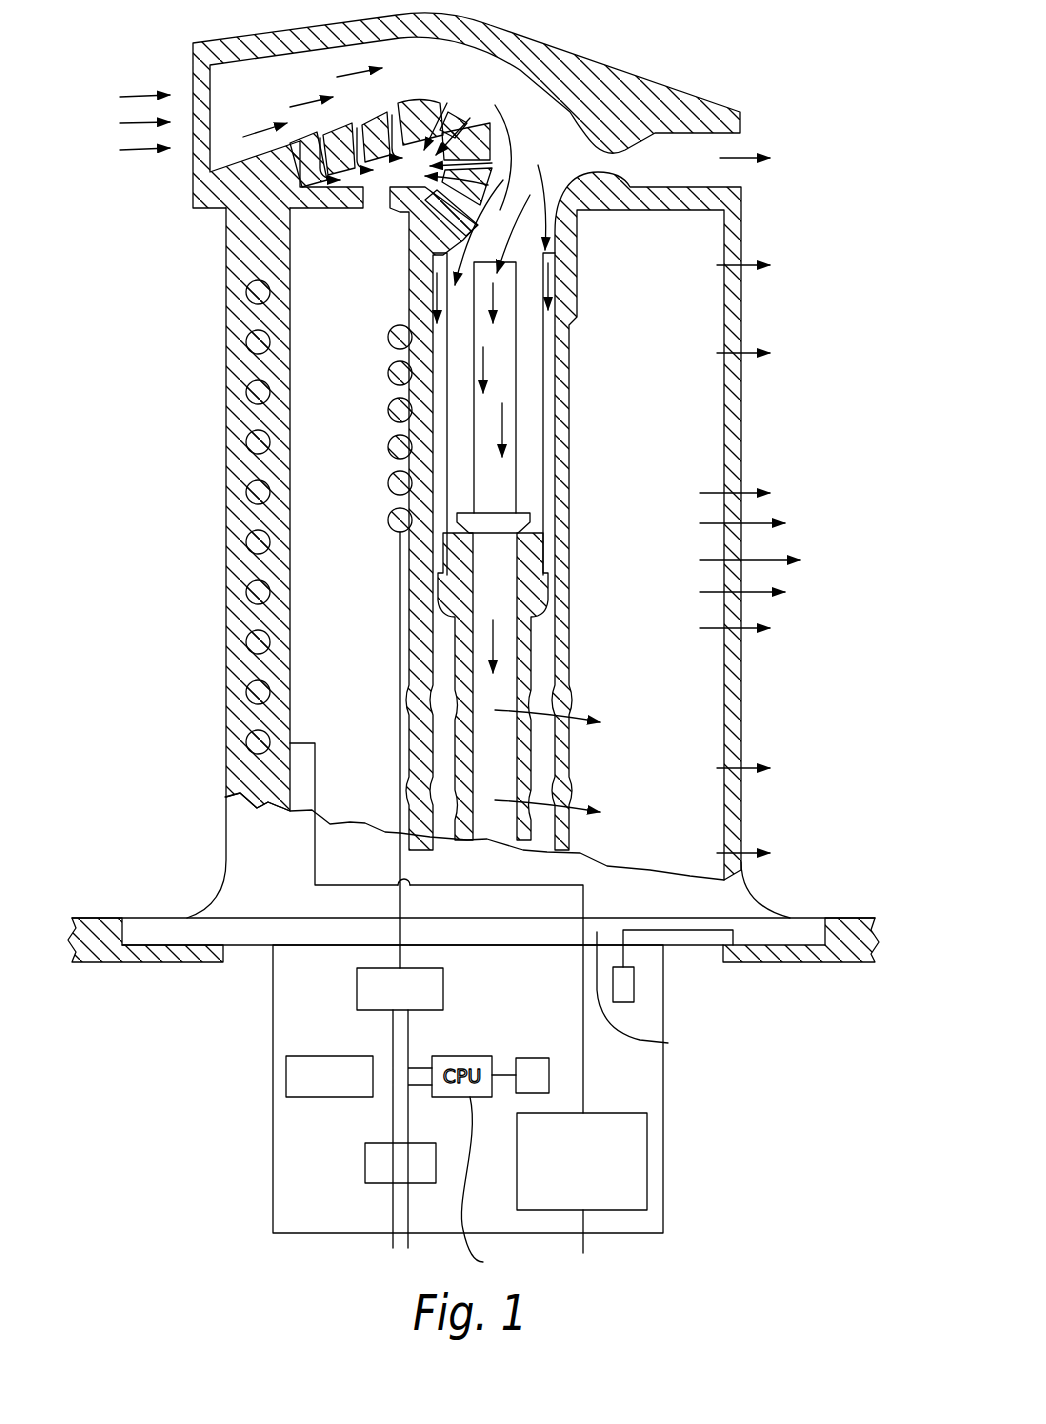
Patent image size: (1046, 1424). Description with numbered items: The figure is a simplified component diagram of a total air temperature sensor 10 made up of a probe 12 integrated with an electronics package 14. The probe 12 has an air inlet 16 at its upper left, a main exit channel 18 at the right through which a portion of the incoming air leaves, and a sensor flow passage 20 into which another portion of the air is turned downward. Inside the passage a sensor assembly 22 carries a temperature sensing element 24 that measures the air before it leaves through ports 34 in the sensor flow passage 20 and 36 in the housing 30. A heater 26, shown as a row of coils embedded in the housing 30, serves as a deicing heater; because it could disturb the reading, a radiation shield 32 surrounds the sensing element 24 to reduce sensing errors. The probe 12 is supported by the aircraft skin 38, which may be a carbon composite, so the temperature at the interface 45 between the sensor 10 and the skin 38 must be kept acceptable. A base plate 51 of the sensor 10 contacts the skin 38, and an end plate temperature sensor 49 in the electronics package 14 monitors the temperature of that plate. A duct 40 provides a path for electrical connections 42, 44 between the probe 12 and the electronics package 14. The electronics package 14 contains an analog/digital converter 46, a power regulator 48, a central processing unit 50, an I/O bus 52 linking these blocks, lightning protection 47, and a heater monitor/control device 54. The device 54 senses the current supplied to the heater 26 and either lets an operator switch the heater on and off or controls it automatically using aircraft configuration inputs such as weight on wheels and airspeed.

The total air temperature sensor 10 is at (767, 93).
The probe 12 is at (660, 100).
The electronics package 14 is at (273, 1190).
The air inlet 16 is at (195, 88).
The main exit channel 18 is at (737, 165).
The sensor flow passage 20 is at (522, 160).
The sensor assembly 22 is at (442, 389).
The temperature sensing element 24 is at (516, 350).
The heater 26 is at (226, 568).
The housing 30 is at (226, 703).
The radiation shield 32 is at (440, 515).
The port 34 is at (555, 720).
The port 36 is at (740, 465).
The aircraft skin 38 is at (121, 962).
The duct 40 is at (668, 1043).
The electrical connection 42 is at (400, 955).
The electrical connection 44 is at (583, 1005).
The interface 45 is at (125, 932).
The analog/digital converter 46 is at (357, 985).
The lightning protection 47 is at (530, 1058).
The power regulator 48 is at (286, 1076).
The end plate temperature sensor 49 is at (634, 985).
The central processing unit 50 is at (489, 1185).
The base plate 51 is at (780, 962).
The I/O bus 52 is at (365, 1168).
The heater monitor/control device 54 is at (647, 1162).